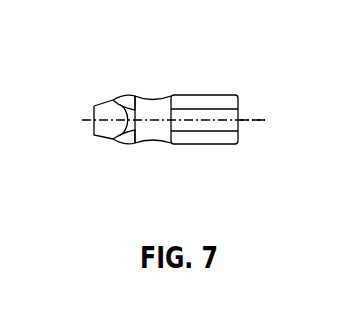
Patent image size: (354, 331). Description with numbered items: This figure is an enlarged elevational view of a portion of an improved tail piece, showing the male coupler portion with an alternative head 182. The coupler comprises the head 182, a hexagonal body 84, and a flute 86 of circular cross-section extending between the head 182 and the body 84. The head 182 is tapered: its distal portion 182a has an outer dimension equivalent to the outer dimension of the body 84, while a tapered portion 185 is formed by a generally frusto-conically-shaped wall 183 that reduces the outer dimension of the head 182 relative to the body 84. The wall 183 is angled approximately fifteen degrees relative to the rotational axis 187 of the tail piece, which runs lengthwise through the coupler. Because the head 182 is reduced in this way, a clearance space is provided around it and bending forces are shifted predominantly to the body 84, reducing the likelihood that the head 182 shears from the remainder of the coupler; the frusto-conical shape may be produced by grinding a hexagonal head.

The body 84 is at (205, 145).
The flute 86 is at (155, 100).
The head 182 is at (90, 106).
The distal portion 182a is at (141, 145).
The frusto-conically-shaped wall 183 is at (112, 142).
The tapered portion 185 is at (108, 99).
The rotational axis 187 is at (252, 122).